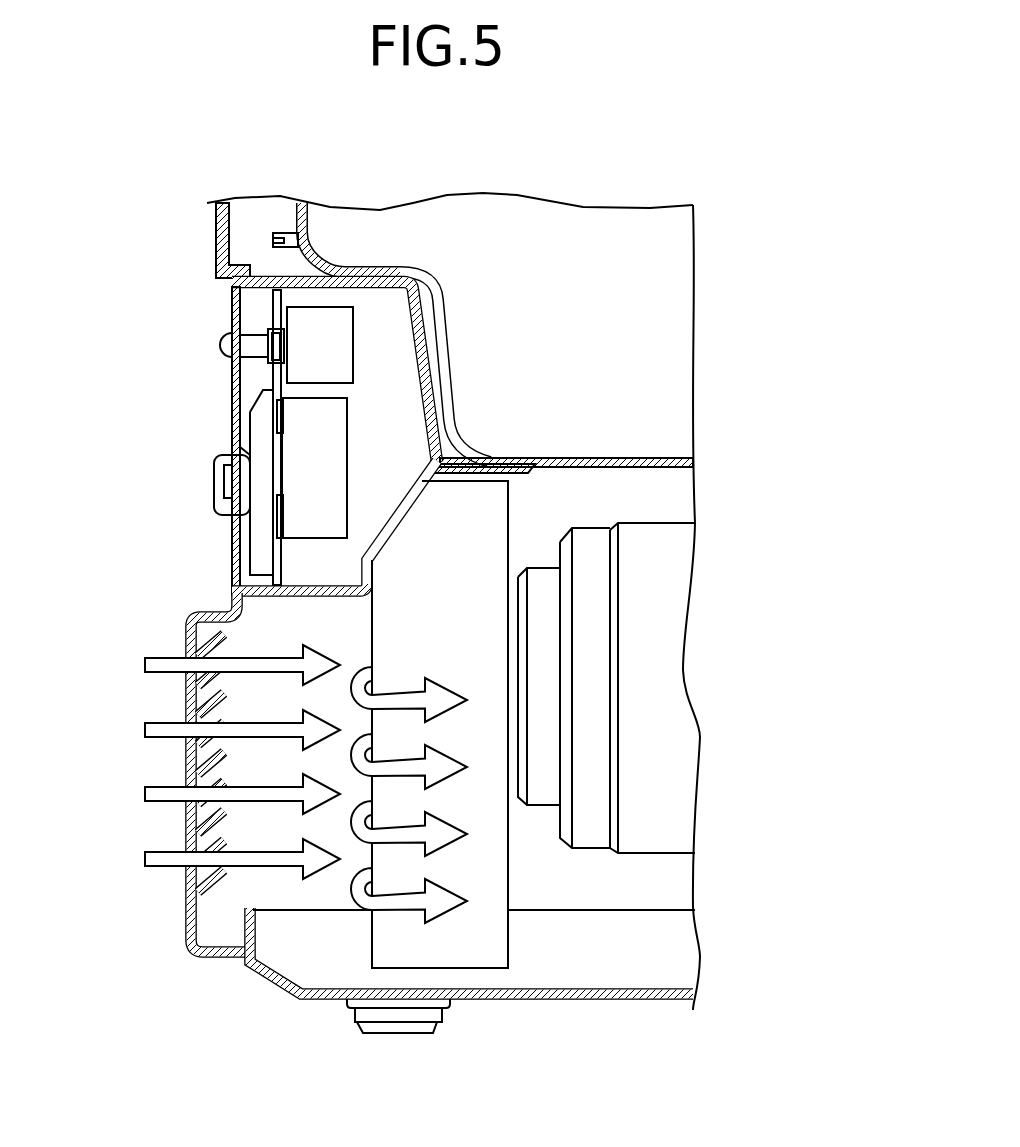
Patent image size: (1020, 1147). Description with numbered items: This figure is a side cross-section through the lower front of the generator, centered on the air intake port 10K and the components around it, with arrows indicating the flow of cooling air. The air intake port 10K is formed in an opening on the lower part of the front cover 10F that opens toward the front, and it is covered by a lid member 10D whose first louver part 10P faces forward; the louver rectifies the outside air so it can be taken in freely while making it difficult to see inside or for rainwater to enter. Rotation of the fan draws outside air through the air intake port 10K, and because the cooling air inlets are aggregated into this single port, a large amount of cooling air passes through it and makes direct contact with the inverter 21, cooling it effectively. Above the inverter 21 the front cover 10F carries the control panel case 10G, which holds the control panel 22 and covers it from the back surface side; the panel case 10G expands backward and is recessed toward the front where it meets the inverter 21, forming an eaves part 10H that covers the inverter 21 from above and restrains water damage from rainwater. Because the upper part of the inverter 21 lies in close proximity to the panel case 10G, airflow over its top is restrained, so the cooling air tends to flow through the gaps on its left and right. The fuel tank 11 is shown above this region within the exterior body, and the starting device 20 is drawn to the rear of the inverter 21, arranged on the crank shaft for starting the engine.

The front cover 10F is at (216, 237).
The control panel case 10G is at (430, 363).
The eaves part 10H is at (520, 474).
The fuel tank 11 is at (292, 222).
The control panel 22 is at (272, 378).
The lid member 10D is at (180, 648).
The first louver part 10P is at (197, 830).
The air intake port 10K is at (272, 910).
The inverter 21 is at (463, 968).
The starting device 20 is at (593, 827).